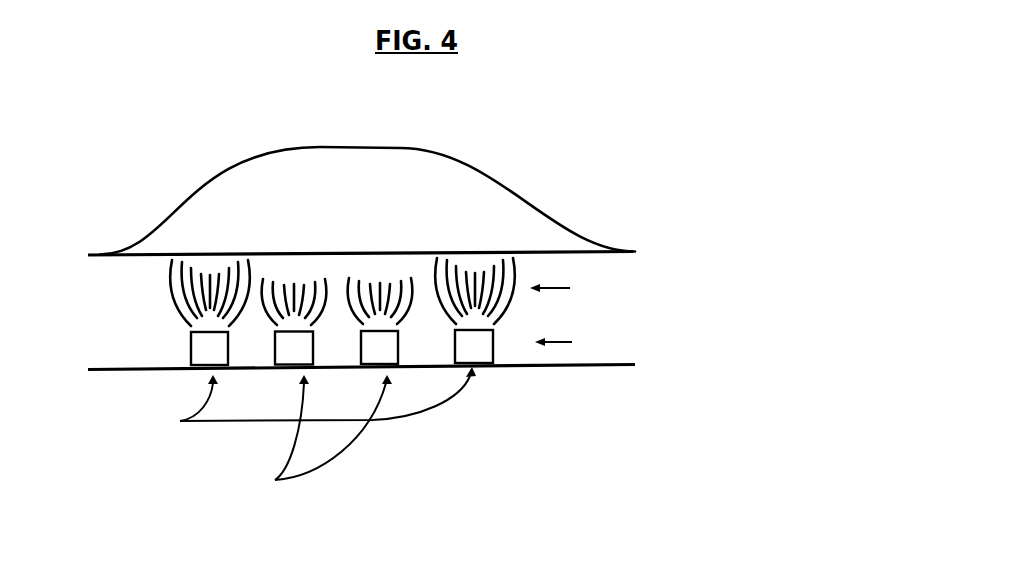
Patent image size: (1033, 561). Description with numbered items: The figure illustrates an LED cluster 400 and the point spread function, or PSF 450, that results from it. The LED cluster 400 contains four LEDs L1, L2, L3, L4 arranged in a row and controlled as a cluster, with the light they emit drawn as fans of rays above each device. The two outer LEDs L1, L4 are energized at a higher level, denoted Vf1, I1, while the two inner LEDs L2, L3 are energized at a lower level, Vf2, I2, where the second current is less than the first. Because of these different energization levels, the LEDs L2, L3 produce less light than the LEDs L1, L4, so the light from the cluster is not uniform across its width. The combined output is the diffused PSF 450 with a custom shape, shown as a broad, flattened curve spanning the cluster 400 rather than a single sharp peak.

The LED cluster 400 is at (428, 392).
The PSF 450 is at (570, 173).
The LED L1 is at (210, 312).
The LED L2 is at (294, 322).
The LED L3 is at (380, 321).
The LED L4 is at (475, 310).